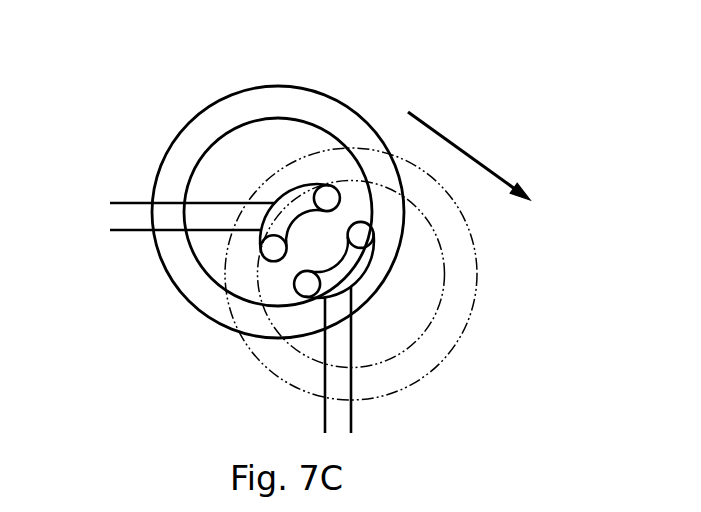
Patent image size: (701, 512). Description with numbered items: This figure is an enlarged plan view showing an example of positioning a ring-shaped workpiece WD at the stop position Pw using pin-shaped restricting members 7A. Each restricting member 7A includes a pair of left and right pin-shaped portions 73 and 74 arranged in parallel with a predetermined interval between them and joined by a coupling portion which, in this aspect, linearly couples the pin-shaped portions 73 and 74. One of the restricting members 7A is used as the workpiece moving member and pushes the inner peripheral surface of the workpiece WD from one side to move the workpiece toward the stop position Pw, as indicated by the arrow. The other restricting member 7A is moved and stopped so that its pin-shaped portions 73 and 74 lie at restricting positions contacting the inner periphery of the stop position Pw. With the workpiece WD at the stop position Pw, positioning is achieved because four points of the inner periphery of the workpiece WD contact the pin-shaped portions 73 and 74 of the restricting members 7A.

The workpiece WD is at (183, 153).
The restricting member 7A is at (290, 186).
The pin-shaped portion 74 is at (326, 197).
The pin-shaped portion 73 is at (361, 235).
The stop position Pw is at (280, 350).